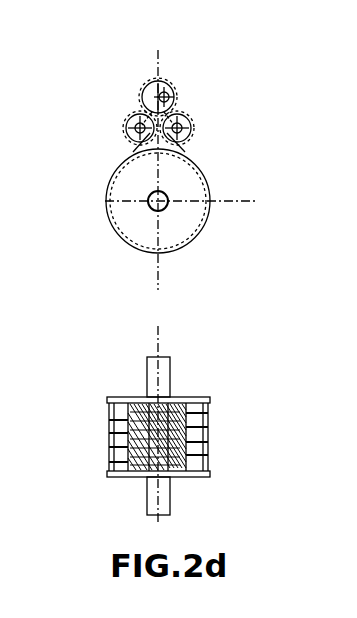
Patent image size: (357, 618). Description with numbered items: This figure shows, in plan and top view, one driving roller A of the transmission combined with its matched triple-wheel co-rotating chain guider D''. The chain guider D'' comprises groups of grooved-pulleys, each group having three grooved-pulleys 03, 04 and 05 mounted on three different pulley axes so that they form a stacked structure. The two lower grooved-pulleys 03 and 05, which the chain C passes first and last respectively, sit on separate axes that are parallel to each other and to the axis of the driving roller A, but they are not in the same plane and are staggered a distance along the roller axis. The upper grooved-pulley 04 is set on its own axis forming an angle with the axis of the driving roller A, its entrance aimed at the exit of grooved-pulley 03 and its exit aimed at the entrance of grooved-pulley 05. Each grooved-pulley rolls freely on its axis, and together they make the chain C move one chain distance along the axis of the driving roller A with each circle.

The driving roller A is at (128, 188).
The grooved-pulley 03 is at (128, 120).
The grooved-pulley 04 is at (150, 88).
The grooved-pulley 05 is at (188, 123).
The chain C is at (137, 152).
The chain guider D'' is at (184, 74).